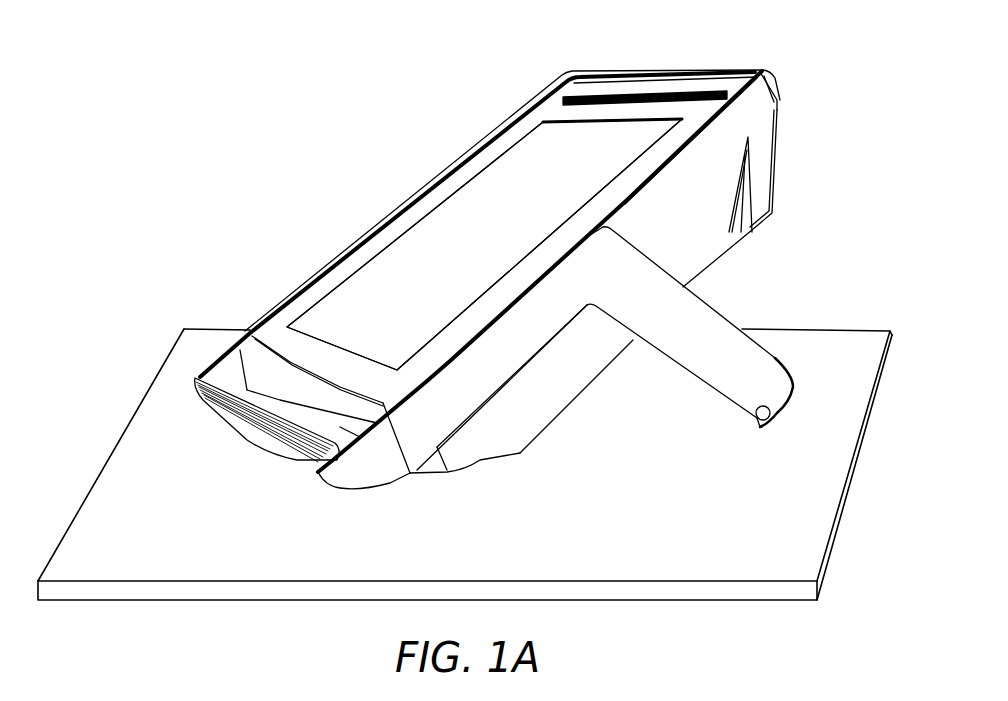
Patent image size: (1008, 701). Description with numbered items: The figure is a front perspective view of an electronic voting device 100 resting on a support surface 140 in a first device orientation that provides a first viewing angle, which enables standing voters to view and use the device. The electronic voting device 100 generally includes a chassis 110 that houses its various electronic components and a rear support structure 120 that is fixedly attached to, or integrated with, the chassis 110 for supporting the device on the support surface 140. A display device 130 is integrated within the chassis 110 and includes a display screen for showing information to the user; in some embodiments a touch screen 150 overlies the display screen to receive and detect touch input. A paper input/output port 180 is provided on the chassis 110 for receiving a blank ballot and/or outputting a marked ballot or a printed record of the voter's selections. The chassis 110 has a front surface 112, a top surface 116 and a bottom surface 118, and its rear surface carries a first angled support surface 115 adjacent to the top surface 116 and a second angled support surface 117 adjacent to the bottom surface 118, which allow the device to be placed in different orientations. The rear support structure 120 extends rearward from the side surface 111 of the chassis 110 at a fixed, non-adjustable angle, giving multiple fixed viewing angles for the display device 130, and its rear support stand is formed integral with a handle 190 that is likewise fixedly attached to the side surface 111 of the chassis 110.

The electronic voting device 100 is at (258, 95).
The chassis 110 is at (527, 120).
The side surface 111 is at (701, 229).
The front surface 112 is at (419, 207).
The first angled support surface 115 is at (482, 464).
The top surface 116 is at (319, 401).
The second angled support surface 117 is at (783, 157).
The bottom surface 118 is at (774, 85).
The rear support structure 120 is at (693, 353).
The display device 130 is at (522, 182).
The touch screen 150 is at (484, 244).
The support surface 140 is at (794, 565).
The paper input/output port 180 is at (613, 98).
The handle 190 is at (357, 488).